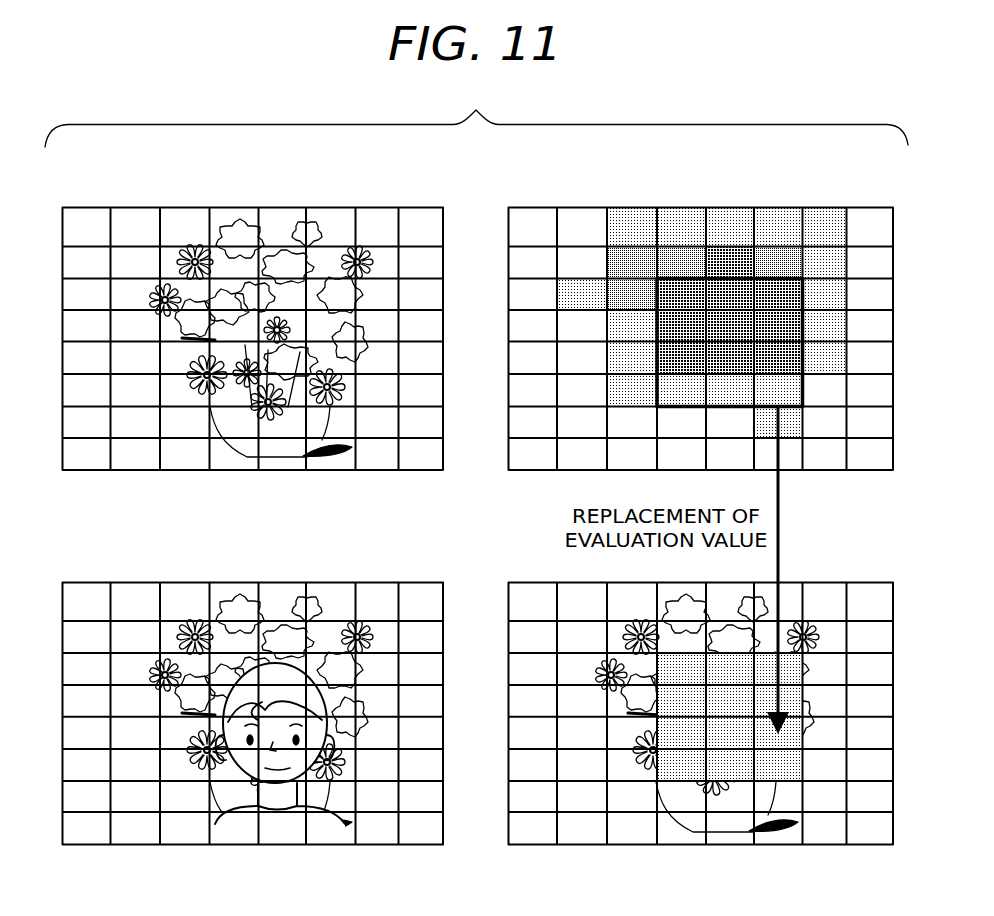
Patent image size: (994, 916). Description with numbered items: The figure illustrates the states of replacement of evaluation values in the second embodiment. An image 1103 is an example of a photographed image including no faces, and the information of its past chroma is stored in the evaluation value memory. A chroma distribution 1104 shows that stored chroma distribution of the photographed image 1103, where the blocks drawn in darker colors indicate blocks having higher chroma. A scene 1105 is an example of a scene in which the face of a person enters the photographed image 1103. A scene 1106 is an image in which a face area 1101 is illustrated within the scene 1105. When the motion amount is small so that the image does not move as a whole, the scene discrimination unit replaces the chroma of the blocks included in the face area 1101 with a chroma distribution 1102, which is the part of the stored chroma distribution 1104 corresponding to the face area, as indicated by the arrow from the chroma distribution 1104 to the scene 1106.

The face area 1101 is at (680, 765).
The chroma distribution 1102 is at (777, 292).
The image 1103 is at (333, 206).
The chroma distribution 1104 is at (702, 313).
The scene 1105 is at (332, 582).
The scene 1106 is at (702, 714).